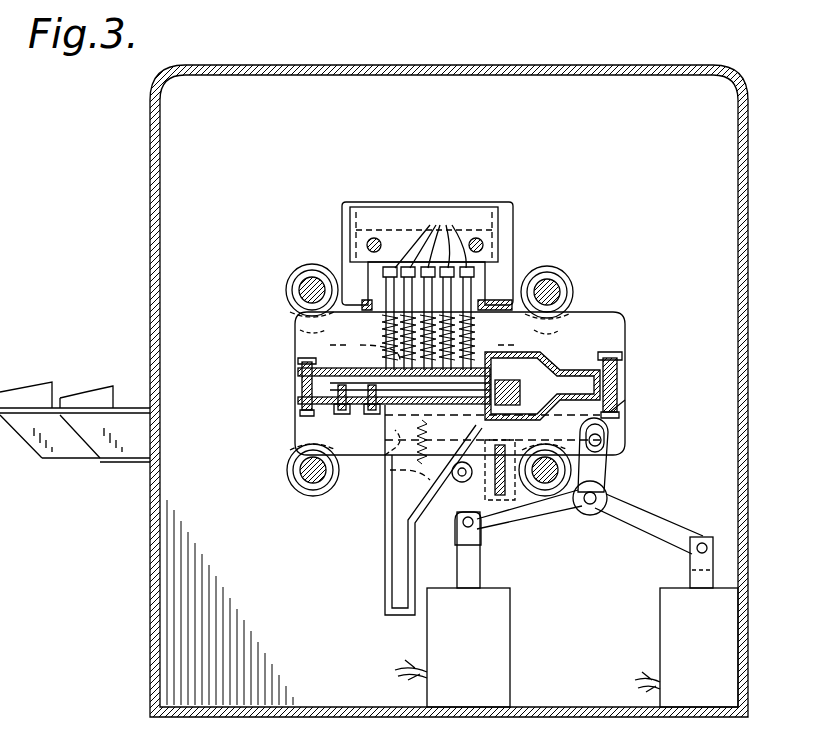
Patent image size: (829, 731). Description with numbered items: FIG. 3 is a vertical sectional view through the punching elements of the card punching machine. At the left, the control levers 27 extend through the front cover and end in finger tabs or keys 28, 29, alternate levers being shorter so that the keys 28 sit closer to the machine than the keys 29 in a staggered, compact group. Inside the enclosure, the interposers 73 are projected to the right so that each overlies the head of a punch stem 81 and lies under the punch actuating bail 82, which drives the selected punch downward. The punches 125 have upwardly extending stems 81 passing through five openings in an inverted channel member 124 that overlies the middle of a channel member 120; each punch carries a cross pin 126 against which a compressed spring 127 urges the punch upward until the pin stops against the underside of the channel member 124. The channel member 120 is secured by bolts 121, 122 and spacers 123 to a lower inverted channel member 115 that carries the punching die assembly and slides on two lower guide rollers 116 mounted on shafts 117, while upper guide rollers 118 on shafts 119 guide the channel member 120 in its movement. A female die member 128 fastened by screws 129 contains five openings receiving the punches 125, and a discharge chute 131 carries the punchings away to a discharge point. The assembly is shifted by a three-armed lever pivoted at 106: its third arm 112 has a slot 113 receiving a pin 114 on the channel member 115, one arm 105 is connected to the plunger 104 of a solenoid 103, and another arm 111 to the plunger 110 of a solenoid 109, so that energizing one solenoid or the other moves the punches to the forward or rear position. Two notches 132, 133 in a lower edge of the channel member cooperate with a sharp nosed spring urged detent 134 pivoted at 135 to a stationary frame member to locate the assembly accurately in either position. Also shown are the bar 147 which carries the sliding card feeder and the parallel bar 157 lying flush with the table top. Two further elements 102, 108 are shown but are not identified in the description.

The control lever 27 is at (122, 462).
The key 28 is at (100, 386).
The key 29 is at (50, 370).
The interposer 73 is at (430, 238).
The punch stem 81 is at (475, 298).
The punch actuating bail 82 is at (478, 193).
The lead wire 102 is at (396, 672).
The solenoid 103 is at (512, 596).
The plunger 104 is at (481, 552).
The arm 105 is at (562, 522).
The pivot 106 is at (604, 508).
The lead wire 108 is at (636, 682).
The solenoid 109 is at (660, 626).
The plunger 110 is at (690, 566).
The arm 111 is at (670, 522).
The third arm 112 is at (610, 472).
The slot 113 is at (602, 442).
The pin 114 is at (606, 432).
The inverted channel member 115 is at (626, 402).
The lower guide roller 116 is at (320, 490).
The shaft 117 is at (300, 468).
The upper guide roller 118 is at (292, 297).
The shaft 119 is at (289, 290).
The channel member 120 is at (628, 330).
The bolt 121 is at (624, 362).
The bolt 122 is at (300, 366).
The spacer 123 is at (298, 386).
The inverted channel member 124 is at (542, 371).
The punch 125 is at (439, 348).
The cross pin 126 is at (395, 305).
The compressed spring 127 is at (430, 336).
The female die member 128 is at (452, 455).
The screw 129 is at (366, 412).
The discharge chute 131 is at (384, 535).
The notch 132 is at (409, 442).
The notch 133 is at (390, 450).
The spring urged detent 134 is at (410, 487).
The pivot 135 is at (460, 482).
The bar 147 is at (456, 512).
The parallel bar 157 is at (521, 390).